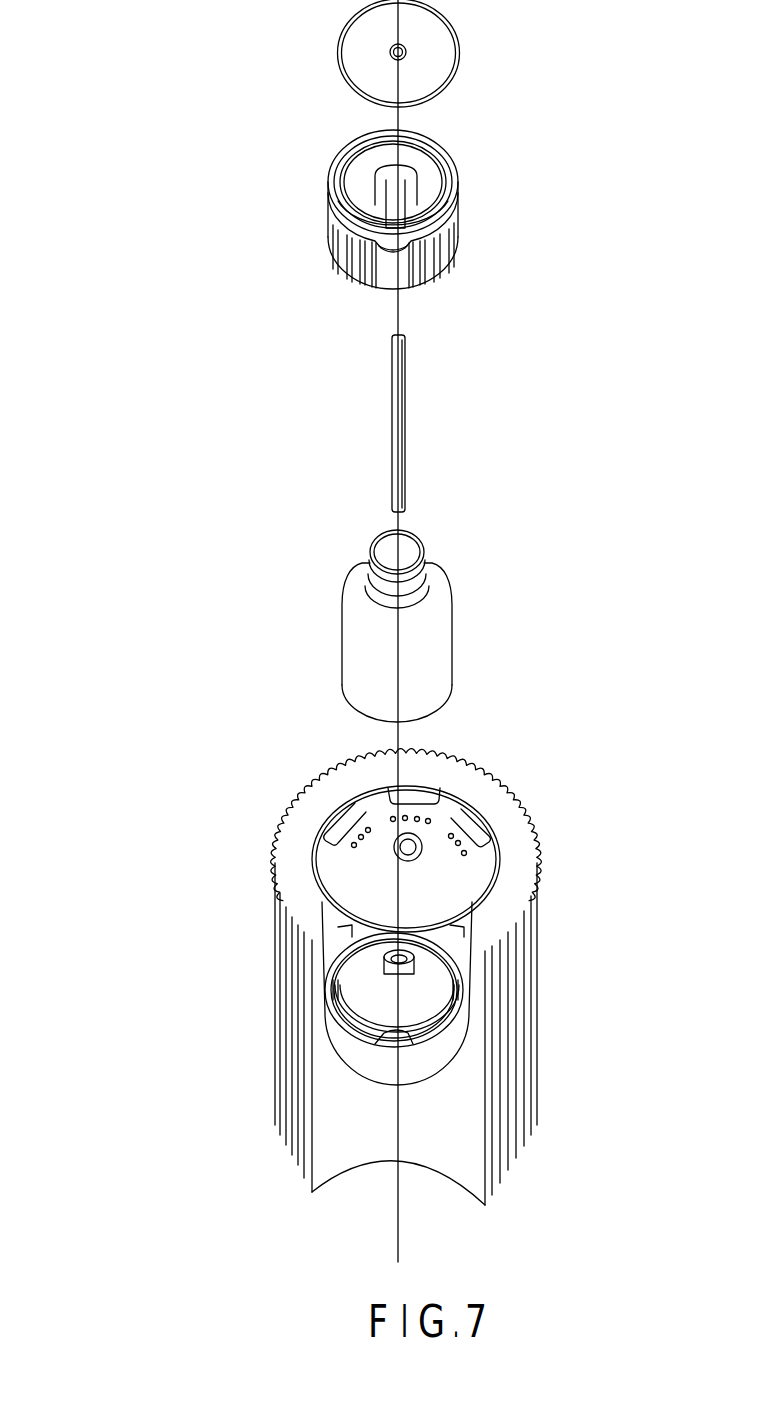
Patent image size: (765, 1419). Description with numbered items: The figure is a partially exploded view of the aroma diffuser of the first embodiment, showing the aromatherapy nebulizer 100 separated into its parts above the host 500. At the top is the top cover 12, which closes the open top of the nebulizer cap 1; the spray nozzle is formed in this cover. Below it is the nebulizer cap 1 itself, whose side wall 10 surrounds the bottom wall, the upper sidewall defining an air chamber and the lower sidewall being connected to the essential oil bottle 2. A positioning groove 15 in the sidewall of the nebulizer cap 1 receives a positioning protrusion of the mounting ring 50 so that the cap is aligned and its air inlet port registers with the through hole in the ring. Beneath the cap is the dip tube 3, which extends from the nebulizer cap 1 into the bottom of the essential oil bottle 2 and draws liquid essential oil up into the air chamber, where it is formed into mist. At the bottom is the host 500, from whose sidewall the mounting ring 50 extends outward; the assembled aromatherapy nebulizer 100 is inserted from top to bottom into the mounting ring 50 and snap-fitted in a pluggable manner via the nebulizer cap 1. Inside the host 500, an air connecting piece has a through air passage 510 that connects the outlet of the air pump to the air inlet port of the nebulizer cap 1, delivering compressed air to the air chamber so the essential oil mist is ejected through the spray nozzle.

The aromatherapy nebulizer 100 is at (190, 601).
The nebulizer cap 1 is at (263, 140).
The top cover 12 is at (365, 68).
The side wall 10 is at (363, 184).
The positioning groove 15 is at (393, 248).
The dip tube 3 is at (400, 436).
The essential oil bottle 2 is at (378, 649).
The host 500 is at (298, 871).
The mounting ring 50 is at (341, 1046).
The air passage 510 is at (413, 962).